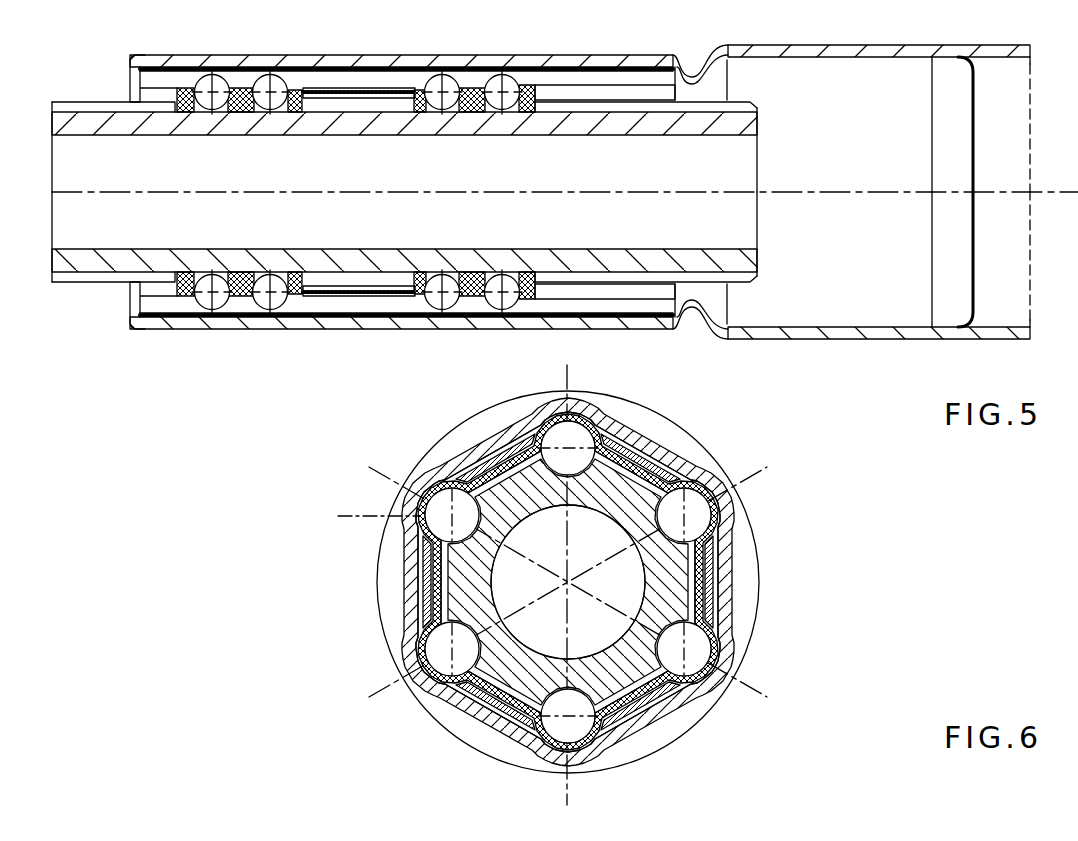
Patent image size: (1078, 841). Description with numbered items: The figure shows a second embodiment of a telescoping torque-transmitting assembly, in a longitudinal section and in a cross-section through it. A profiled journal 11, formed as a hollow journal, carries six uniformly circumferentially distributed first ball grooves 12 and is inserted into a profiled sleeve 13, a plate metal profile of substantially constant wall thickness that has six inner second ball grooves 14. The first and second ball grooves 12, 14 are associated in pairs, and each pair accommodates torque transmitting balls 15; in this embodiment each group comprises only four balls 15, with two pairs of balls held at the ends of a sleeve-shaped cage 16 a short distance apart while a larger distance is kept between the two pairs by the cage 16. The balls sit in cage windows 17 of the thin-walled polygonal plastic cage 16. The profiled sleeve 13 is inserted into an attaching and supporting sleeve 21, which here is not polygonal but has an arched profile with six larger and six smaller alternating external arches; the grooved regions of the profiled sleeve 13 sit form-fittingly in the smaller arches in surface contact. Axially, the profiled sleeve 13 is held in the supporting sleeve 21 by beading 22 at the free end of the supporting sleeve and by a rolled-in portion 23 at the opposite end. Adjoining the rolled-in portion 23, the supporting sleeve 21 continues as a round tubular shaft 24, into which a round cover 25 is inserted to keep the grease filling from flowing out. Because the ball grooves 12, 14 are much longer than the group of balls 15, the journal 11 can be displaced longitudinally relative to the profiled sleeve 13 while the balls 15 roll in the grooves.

In FIG. 5, the profiled journal 11 is at (73, 268).
In FIG. 6, the profiled journal 11 is at (437, 620).
In FIG. 5, the first ball grooves 12 is at (100, 280).
In FIG. 6, the first ball grooves 12 is at (440, 655).
In FIG. 5, the profiled sleeve 13 is at (385, 317).
In FIG. 6, the profiled sleeve 13 is at (715, 607).
In FIG. 5, the second ball grooves 14 is at (411, 300).
In FIG. 6, the second ball grooves 14 is at (710, 647).
In FIG. 5, the torque transmitting balls 15 is at (205, 305).
In FIG. 6, the torque transmitting balls 15 is at (432, 511).
In FIG. 5, the cage 16 is at (240, 298).
In FIG. 6, the cage 16 is at (427, 580).
In FIG. 5, the cage windows 17 is at (262, 315).
In FIG. 6, the cage windows 17 is at (428, 538).
In FIG. 5, the supporting sleeve 21 is at (649, 322).
In FIG. 6, the supporting sleeve 21 is at (725, 553).
In FIG. 5, the beading 22 is at (137, 307).
In FIG. 5, the rolled-in portion 23 is at (708, 308).
In FIG. 5, the tubular shaft 24 is at (858, 330).
In FIG. 6, the tubular shaft 24 is at (750, 582).
In FIG. 5, the cover 25 is at (973, 327).